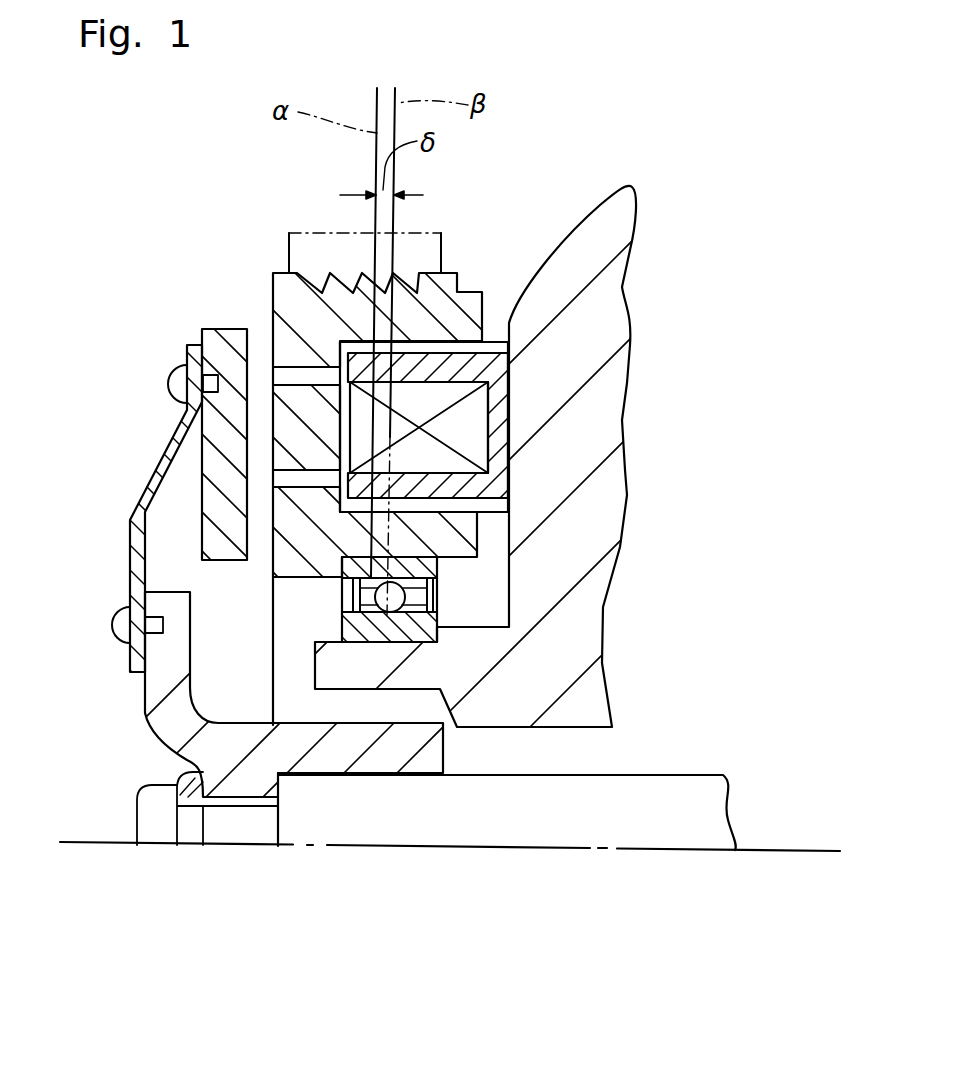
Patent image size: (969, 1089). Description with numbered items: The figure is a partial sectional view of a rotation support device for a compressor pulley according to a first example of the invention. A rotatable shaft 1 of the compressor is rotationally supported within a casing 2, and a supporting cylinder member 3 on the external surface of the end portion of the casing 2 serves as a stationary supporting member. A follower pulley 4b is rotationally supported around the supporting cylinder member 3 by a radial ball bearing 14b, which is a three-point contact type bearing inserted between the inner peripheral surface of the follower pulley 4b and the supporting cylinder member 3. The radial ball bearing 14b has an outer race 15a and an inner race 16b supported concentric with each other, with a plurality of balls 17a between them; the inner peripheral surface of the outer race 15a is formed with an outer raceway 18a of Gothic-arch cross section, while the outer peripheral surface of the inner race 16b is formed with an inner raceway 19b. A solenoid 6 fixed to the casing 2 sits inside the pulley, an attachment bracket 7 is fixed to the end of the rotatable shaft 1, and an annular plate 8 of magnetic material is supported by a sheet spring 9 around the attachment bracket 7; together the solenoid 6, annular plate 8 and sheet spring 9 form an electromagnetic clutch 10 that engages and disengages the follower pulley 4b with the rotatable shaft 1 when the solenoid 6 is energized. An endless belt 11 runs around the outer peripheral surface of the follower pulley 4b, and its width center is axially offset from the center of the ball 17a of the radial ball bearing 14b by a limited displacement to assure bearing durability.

The rotatable shaft 1 is at (492, 827).
The casing 2 is at (610, 297).
The supporting cylinder member 3 is at (362, 680).
The follower pulley 4b is at (283, 290).
The solenoid 6 is at (470, 423).
The attachment bracket 7 is at (173, 733).
The annular plate 8 is at (142, 497).
The sheet spring 9 is at (137, 550).
The electromagnetic clutch 10 is at (213, 458).
The endless belt 11 is at (432, 233).
The radial ball bearing 14b is at (437, 593).
The outer race 15a is at (410, 560).
The inner race 16b is at (440, 640).
The ball 17a is at (420, 607).
The outer raceway 18a is at (345, 597).
The inner raceway 19b is at (343, 600).